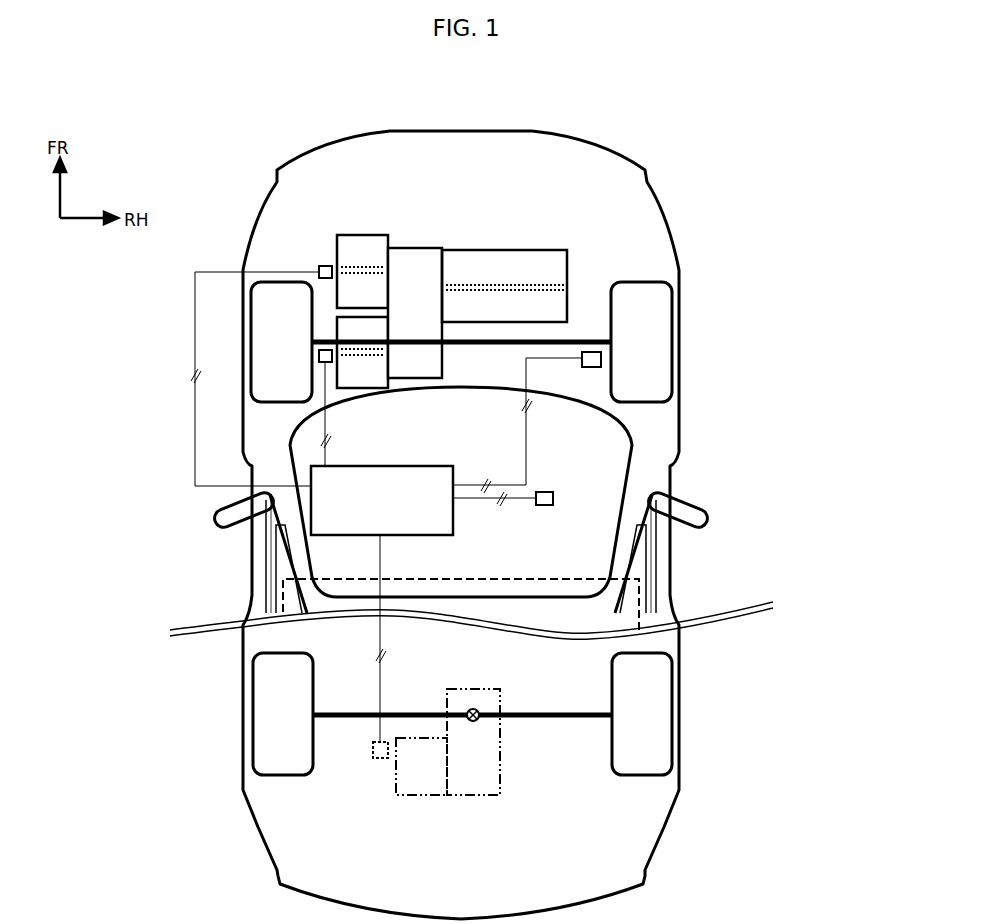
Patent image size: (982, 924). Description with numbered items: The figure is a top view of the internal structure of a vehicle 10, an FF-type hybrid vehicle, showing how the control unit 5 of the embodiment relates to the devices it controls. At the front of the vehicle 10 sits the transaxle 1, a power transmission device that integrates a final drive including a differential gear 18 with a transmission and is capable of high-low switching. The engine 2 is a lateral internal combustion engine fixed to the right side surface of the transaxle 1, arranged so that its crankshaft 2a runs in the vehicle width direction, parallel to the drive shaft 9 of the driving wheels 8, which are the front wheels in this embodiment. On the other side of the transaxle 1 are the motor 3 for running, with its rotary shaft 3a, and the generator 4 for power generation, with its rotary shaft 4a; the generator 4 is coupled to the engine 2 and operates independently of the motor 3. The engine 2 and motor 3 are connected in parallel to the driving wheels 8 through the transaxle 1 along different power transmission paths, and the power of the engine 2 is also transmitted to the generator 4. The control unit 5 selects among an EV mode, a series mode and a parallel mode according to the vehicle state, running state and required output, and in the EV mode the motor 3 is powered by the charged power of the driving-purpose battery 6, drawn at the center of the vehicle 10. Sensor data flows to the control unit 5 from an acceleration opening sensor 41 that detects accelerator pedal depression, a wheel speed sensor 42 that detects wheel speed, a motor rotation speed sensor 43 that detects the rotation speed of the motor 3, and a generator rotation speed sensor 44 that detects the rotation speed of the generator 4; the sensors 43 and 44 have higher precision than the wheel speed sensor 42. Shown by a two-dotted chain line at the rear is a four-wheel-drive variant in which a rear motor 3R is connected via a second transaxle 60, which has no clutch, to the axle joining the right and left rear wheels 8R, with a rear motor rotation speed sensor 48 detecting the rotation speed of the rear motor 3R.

The transaxle 1 is at (413, 248).
The engine 2 is at (526, 250).
The crankshaft 2a is at (476, 286).
The motor 3 is at (377, 388).
The rotary shaft of the motor 3a is at (363, 358).
The rear motor 3R is at (402, 797).
The generator 4 is at (358, 235).
The rotary shaft of the generator 4a is at (353, 266).
The control unit 5 is at (360, 536).
The driving-purpose battery 6 is at (641, 600).
The driving wheels 8 is at (243, 353).
The rear wheels 8R is at (253, 705).
The drive shaft 9 is at (499, 345).
The vehicle 10 is at (753, 222).
The differential gear 18 is at (419, 350).
The acceleration opening sensor 41 is at (555, 498).
The wheel speed sensor 42 is at (591, 367).
The motor rotation speed sensor 43 is at (319, 356).
The generator rotation speed sensor 44 is at (319, 265).
The rear motor rotation speed sensor 48 is at (372, 752).
The second transaxle 60 is at (502, 762).